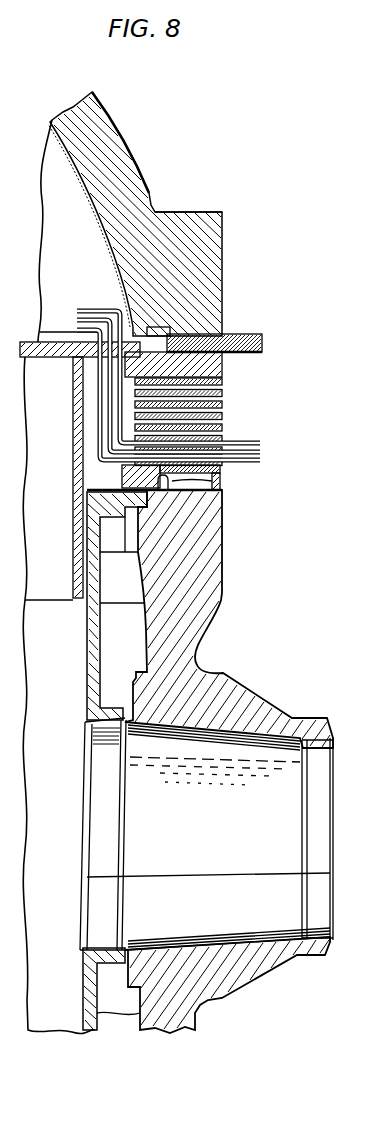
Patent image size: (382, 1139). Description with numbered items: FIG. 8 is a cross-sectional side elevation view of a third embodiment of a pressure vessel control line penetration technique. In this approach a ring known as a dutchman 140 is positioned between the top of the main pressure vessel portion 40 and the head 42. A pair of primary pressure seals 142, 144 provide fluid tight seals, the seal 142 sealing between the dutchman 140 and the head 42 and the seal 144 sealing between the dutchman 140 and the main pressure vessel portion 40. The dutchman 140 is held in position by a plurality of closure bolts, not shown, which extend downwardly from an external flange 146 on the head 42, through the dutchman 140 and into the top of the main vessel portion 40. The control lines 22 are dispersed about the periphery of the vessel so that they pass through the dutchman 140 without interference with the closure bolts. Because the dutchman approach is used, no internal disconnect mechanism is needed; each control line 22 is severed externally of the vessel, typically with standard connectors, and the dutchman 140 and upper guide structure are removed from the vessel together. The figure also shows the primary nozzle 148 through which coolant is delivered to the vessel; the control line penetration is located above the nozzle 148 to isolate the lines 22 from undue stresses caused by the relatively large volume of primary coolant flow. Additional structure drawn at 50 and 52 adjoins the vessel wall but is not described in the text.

The external flange 146 is at (203, 212).
The head 42 is at (210, 272).
The primary pressure seal 142 is at (160, 333).
The control lines 22 is at (70, 327).
The mounting plate 50 is at (53, 358).
The dutchman 140 is at (222, 367).
The primary pressure seal 144 is at (213, 487).
The main pressure vessel portion 40 is at (200, 553).
The sleeve 52 is at (100, 630).
The primary nozzle 148 is at (240, 855).